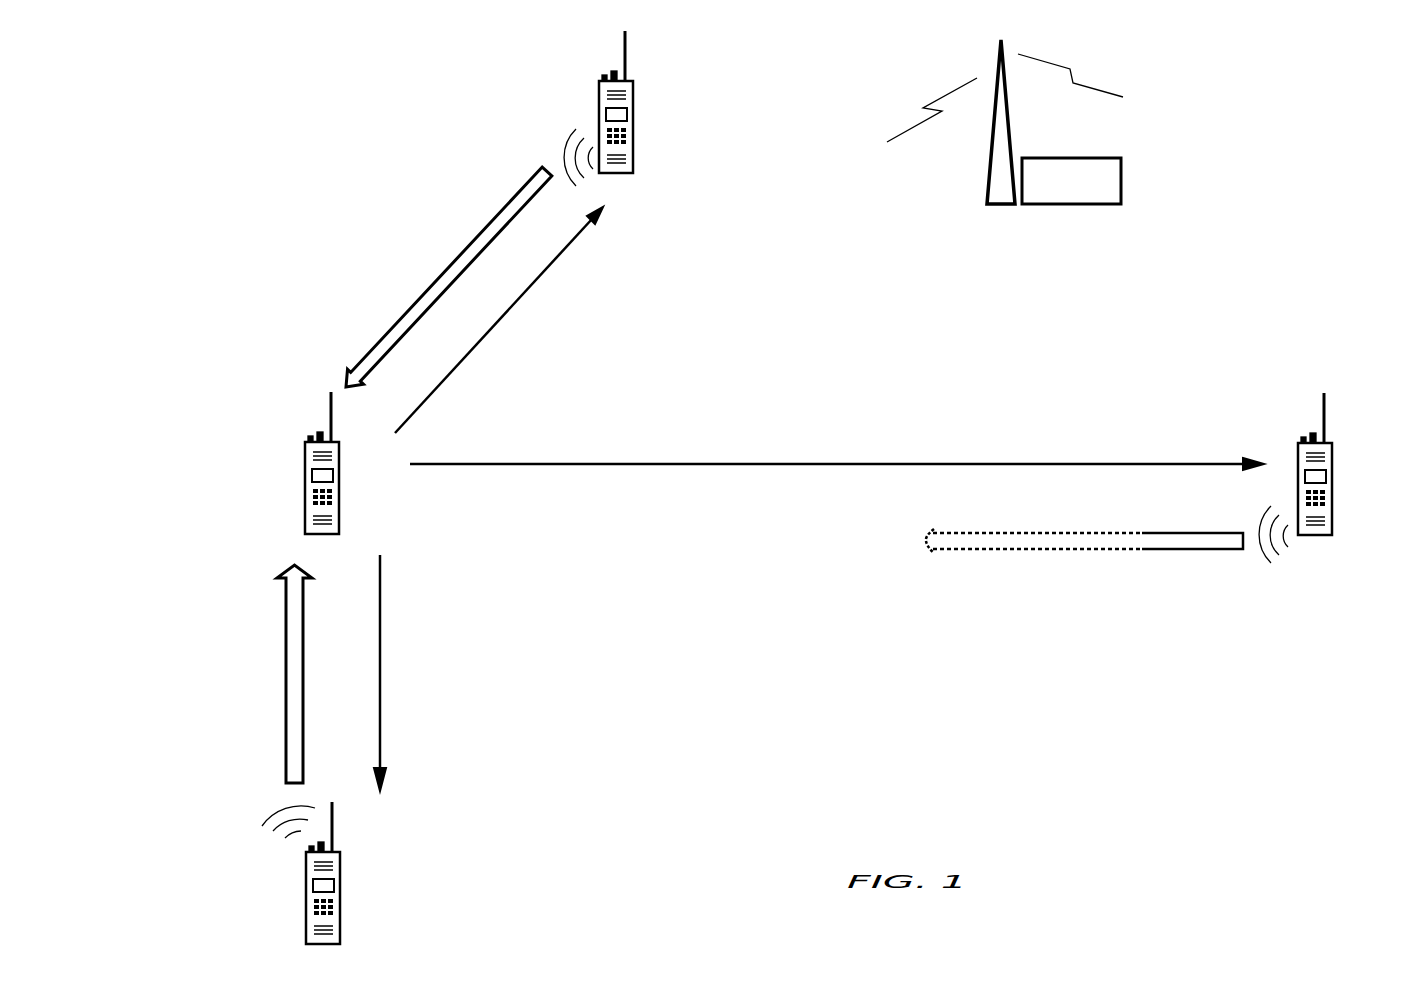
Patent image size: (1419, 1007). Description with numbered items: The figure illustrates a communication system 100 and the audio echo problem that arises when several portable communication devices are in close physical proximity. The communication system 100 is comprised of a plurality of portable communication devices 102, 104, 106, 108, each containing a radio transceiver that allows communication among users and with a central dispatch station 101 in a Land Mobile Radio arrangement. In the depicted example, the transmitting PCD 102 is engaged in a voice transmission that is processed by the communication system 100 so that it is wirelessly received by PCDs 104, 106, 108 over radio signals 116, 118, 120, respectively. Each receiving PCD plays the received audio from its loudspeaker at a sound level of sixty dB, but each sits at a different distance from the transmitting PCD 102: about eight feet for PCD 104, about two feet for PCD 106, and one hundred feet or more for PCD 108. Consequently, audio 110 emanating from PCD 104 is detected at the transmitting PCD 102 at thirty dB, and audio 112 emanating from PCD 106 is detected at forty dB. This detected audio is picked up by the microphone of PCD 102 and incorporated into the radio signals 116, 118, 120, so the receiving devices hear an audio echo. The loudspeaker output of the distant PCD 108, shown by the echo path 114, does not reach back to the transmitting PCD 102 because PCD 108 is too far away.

The communication system 100 is at (739, 326).
The central dispatch station 101 is at (1053, 191).
The portable communication device 102 is at (339, 507).
The portable communication device 104 is at (632, 148).
The portable communication device 106 is at (340, 933).
The portable communication device 108 is at (1332, 513).
The audio 110 is at (467, 270).
The audio 112 is at (303, 662).
The echo path that does not reach back to transmitting radio 114 is at (1178, 550).
The radio signal 116 is at (510, 315).
The radio signal 118 is at (380, 685).
The radio signal 120 is at (1094, 468).